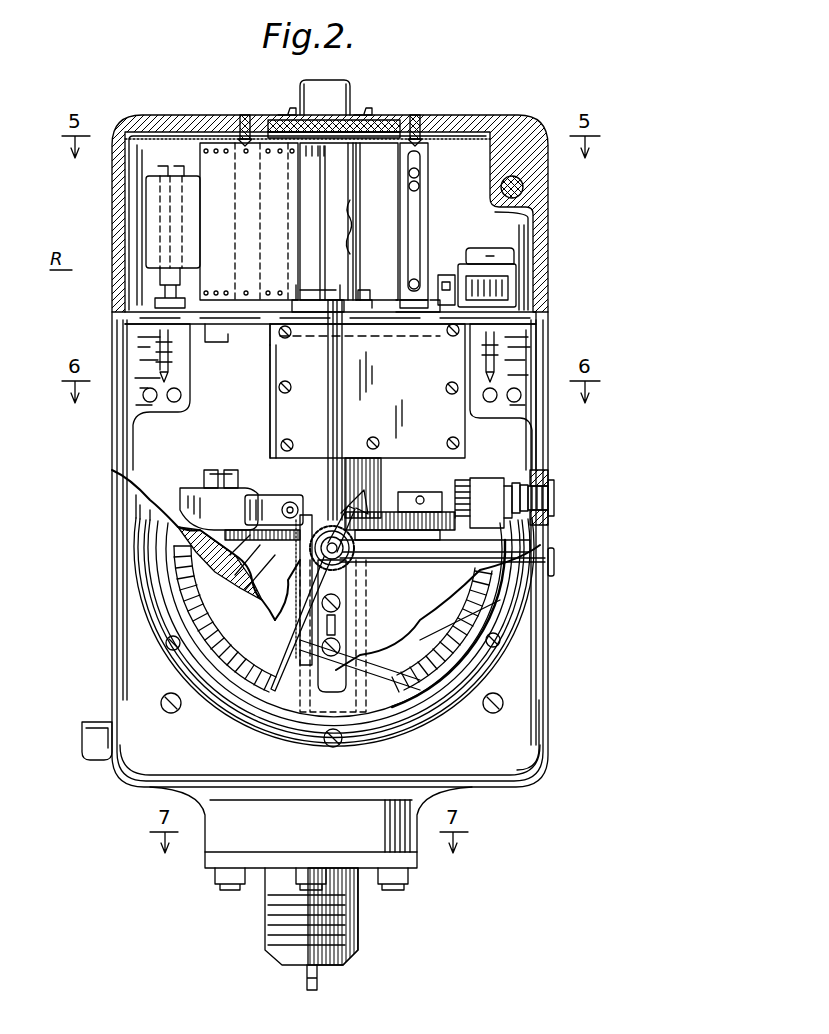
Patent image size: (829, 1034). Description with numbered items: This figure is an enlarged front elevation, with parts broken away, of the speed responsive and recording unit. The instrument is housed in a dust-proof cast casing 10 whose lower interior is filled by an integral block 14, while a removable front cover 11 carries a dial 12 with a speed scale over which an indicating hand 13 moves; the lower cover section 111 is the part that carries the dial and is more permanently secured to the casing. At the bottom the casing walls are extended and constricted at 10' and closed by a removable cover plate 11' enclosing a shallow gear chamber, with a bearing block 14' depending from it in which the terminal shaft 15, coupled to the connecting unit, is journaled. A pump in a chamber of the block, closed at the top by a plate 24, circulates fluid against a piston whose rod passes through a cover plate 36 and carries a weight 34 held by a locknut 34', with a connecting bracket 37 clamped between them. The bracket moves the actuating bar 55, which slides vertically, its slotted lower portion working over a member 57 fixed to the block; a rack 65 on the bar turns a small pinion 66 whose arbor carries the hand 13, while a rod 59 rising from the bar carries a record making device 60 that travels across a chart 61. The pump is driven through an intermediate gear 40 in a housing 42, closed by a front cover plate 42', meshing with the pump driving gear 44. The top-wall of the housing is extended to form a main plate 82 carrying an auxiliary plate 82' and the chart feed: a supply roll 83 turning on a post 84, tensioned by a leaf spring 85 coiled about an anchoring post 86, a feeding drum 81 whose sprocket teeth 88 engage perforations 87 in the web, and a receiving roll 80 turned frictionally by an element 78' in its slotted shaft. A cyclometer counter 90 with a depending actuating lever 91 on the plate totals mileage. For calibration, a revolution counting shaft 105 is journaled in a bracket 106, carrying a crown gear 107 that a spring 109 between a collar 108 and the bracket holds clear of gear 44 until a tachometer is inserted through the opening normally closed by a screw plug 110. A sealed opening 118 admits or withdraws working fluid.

The casing 10 is at (307, 451).
The removable front cover 11 is at (100, 510).
The dial 12 is at (176, 620).
The indicating hand 13 is at (225, 662).
The integral block 14 is at (467, 548).
The plate 24 is at (526, 542).
The weight 34 is at (224, 505).
The locknut 34' is at (226, 458).
The cover plate 36 is at (268, 562).
The connecting bracket 37 is at (204, 484).
The intermediate gear 40 is at (435, 530).
The housing 42 is at (249, 401).
The front cover plate 42' is at (251, 347).
The pump driving gear 44 is at (406, 518).
The actuating bar 55 is at (346, 598).
The member 57 is at (332, 625).
The rod 59 is at (352, 390).
The record making device 60 is at (326, 288).
The chart 61 is at (348, 196).
The rack 65 is at (312, 570).
The pinion 66 is at (348, 558).
The element 78' is at (434, 221).
The receiving roll 80 is at (434, 227).
The feeding drum 81 is at (356, 228).
The main plate 82 is at (301, 391).
The auxiliary plate 82' is at (212, 341).
The supply roll 83 is at (200, 160).
The post 84 is at (234, 170).
The leaf spring 85 is at (150, 210).
The anchoring post 86 is at (160, 280).
The perforations 87 is at (280, 134).
The sprocket teeth 88 is at (412, 125).
The counter 90 is at (508, 270).
The actuating lever 91 is at (446, 275).
The revolution counting shaft 105 is at (548, 478).
The bracket 106 is at (486, 482).
The crown gear 107 is at (456, 500).
The collar 108 is at (524, 488).
The spring 109 is at (516, 486).
The screw plug 110 is at (556, 496).
The lower cover section 111 is at (512, 724).
The sealed opening 118 is at (556, 574).
The constricted walls 10' is at (311, 837).
The removable cover plate 11' is at (293, 888).
The bearing block 14' is at (337, 916).
The terminal shaft 15 is at (317, 982).